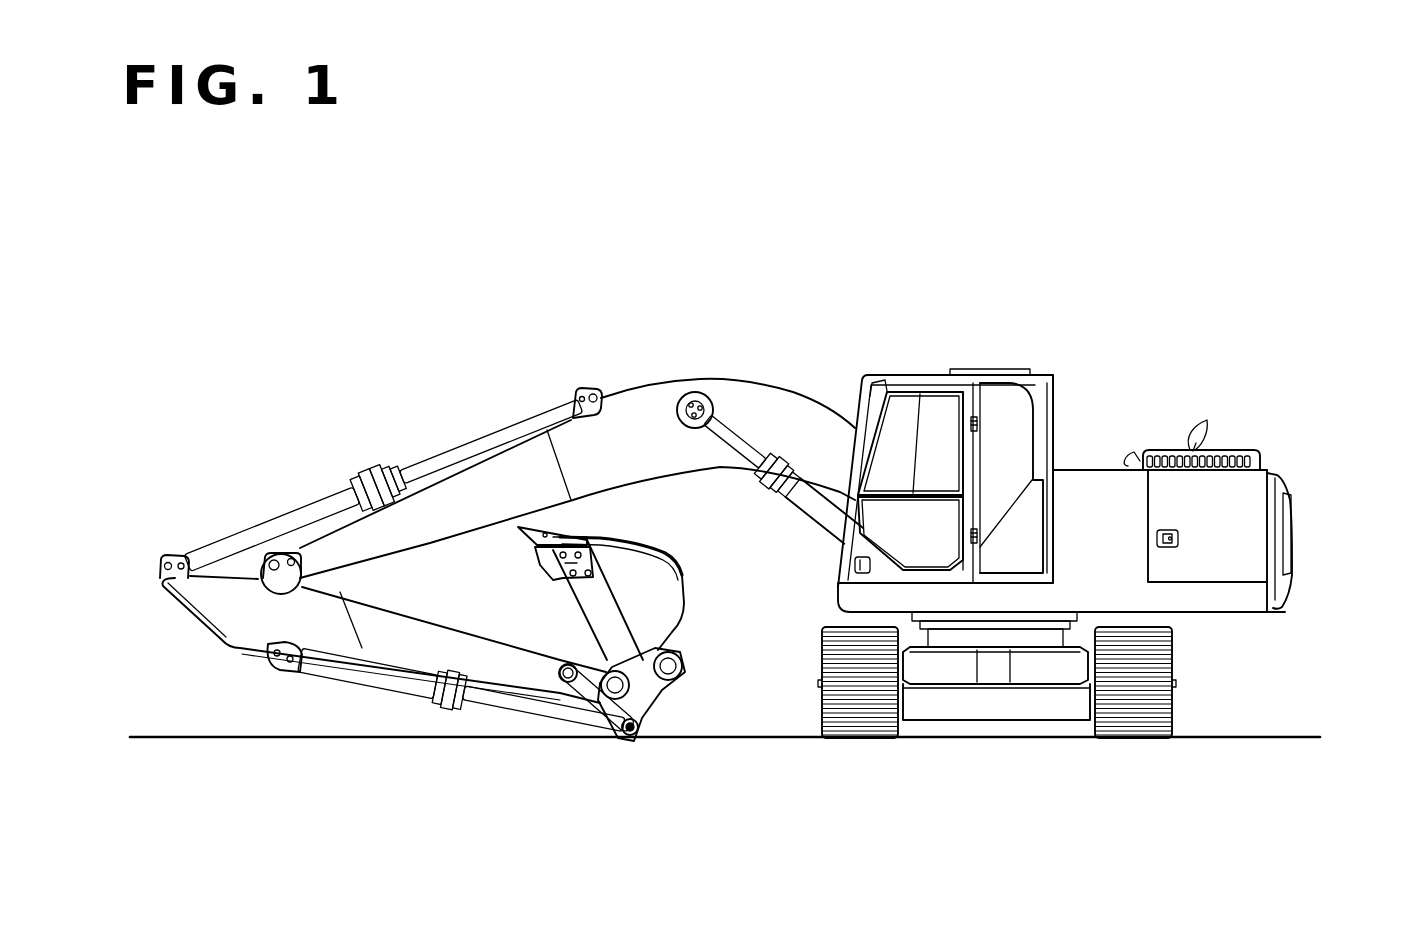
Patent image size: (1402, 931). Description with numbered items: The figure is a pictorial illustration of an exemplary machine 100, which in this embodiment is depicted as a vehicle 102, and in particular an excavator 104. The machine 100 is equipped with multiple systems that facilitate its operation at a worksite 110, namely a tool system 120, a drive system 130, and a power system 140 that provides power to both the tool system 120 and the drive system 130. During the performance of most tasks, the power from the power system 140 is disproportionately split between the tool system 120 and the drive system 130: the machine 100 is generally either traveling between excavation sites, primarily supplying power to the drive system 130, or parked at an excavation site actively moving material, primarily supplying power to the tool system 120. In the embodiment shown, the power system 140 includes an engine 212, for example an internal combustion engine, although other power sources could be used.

The machine 100 is at (1137, 335).
The vehicle 102 is at (1275, 387).
The excavator 104 is at (1085, 469).
The worksite 110 is at (367, 366).
The tool system 120 is at (715, 753).
The drive system 130 is at (1280, 620).
The power system 140 is at (1300, 427).
The engine 212 is at (1224, 523).